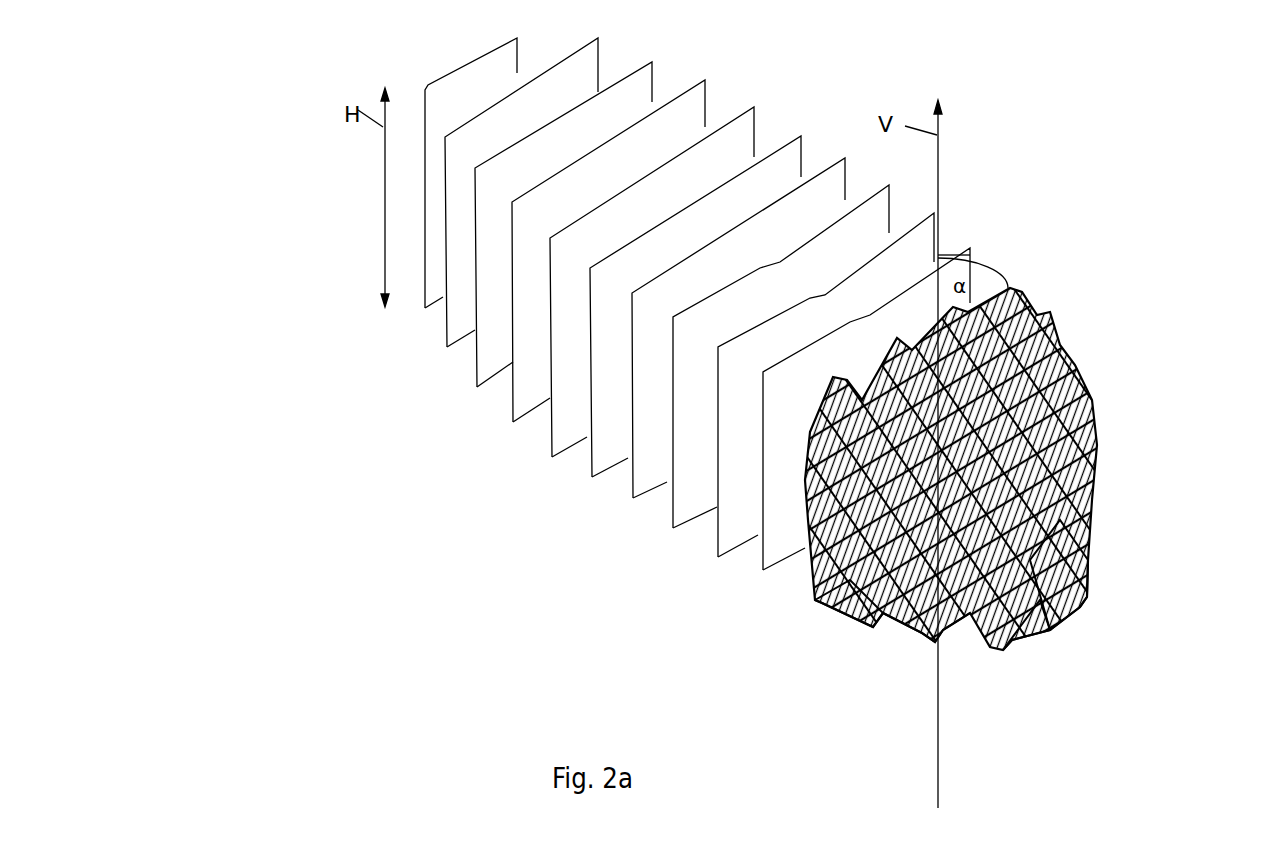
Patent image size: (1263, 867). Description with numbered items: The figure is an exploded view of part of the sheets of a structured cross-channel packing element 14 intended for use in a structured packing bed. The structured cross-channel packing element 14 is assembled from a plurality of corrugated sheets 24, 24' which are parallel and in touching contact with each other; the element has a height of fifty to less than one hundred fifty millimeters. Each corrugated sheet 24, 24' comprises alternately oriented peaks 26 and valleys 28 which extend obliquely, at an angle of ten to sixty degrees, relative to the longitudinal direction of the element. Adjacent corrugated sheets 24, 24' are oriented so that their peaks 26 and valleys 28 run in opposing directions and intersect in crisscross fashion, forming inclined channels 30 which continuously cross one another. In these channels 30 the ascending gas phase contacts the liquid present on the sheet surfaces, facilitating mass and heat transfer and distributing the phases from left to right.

The structured cross-channel packing element 14 is at (345, 338).
The corrugated sheet 24 is at (1014, 469).
The corrugated sheet 24' is at (885, 678).
The peak 26 is at (1077, 599).
The valley 28 is at (1119, 646).
The inclined channel 30 is at (783, 634).